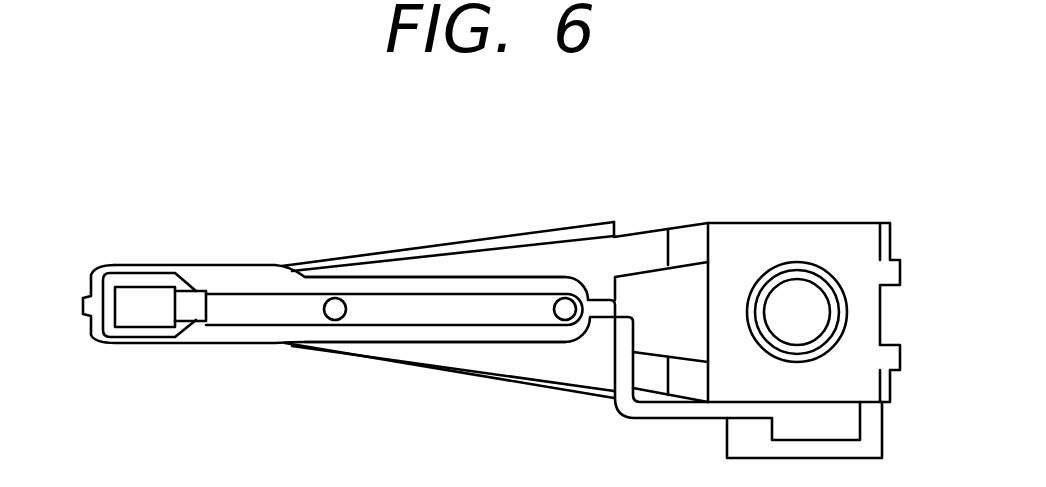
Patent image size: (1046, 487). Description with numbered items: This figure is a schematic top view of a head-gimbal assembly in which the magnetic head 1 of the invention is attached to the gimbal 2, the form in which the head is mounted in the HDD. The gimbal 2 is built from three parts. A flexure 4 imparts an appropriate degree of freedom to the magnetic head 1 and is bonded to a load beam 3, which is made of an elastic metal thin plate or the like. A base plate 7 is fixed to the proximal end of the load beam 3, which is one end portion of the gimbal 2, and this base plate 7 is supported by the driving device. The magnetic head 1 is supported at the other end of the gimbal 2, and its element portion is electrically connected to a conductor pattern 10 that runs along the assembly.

The magnetic head 1 is at (138, 310).
The gimbal 2 is at (505, 232).
The load beam 3 is at (495, 352).
The flexure 4 is at (253, 312).
The base plate 7 is at (825, 250).
The conductor pattern 10 is at (461, 333).